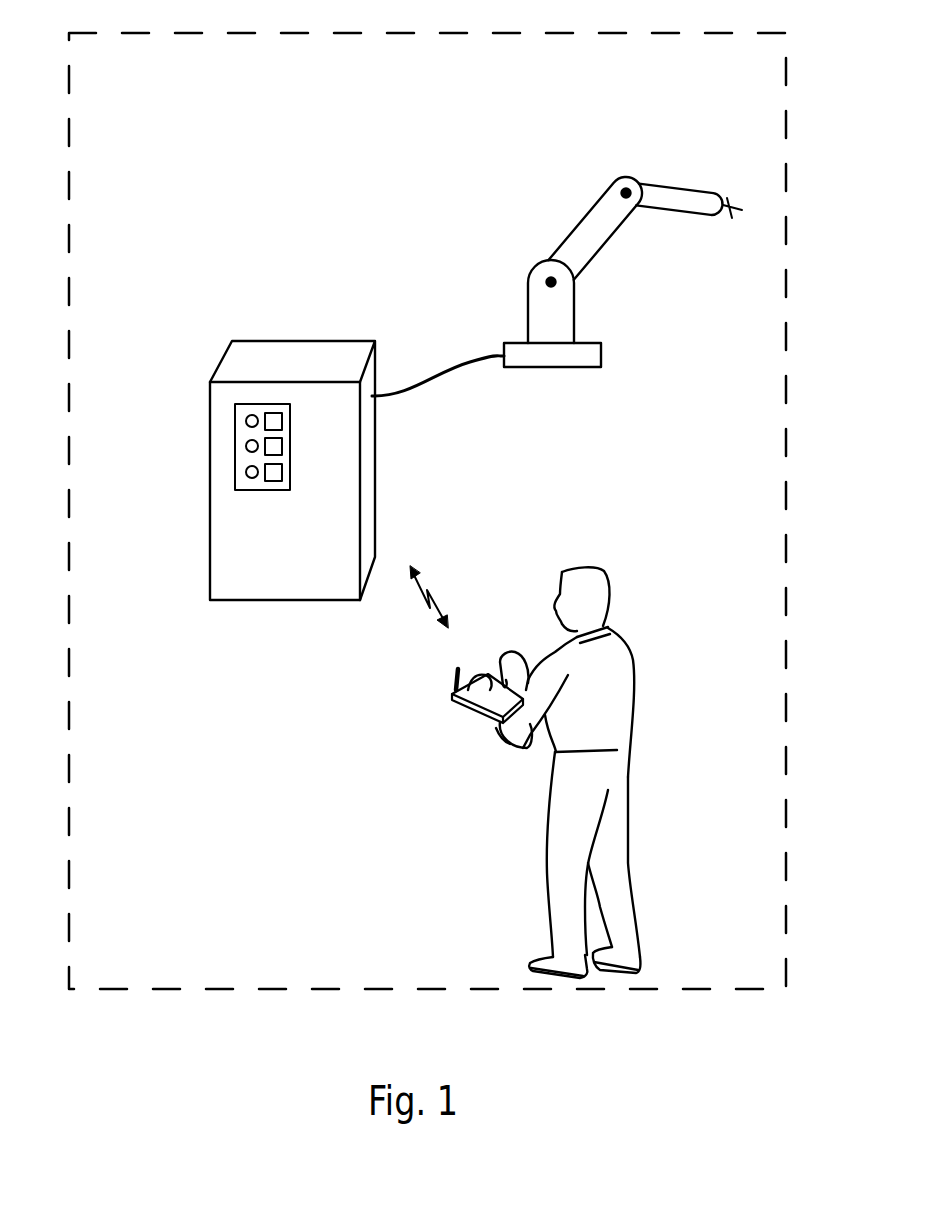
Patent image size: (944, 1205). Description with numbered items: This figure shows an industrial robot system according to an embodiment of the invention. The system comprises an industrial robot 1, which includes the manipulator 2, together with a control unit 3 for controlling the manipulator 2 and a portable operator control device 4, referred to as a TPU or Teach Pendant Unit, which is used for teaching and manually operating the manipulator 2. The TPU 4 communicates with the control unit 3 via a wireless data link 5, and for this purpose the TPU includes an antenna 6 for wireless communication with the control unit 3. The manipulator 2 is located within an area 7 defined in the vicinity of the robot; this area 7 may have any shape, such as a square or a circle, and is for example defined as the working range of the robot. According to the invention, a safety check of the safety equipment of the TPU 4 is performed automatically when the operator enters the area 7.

The industrial robot 1 is at (498, 158).
The manipulator 2 is at (617, 245).
The control unit 3 is at (300, 341).
The portable operator control device 4 is at (482, 660).
The wireless data link 5 is at (429, 592).
The antenna 6 is at (455, 683).
The area 7 is at (752, 536).